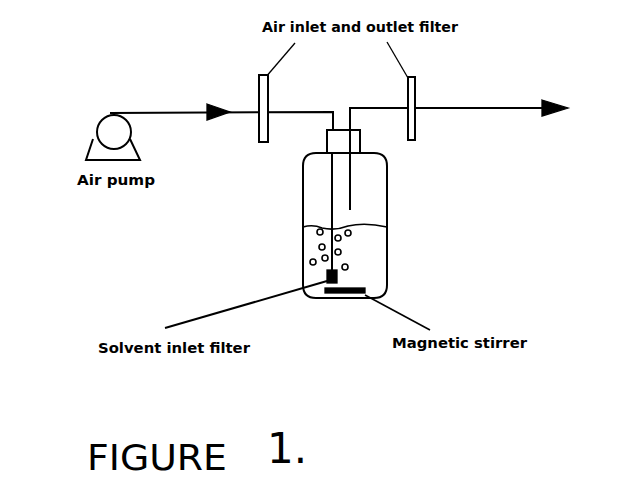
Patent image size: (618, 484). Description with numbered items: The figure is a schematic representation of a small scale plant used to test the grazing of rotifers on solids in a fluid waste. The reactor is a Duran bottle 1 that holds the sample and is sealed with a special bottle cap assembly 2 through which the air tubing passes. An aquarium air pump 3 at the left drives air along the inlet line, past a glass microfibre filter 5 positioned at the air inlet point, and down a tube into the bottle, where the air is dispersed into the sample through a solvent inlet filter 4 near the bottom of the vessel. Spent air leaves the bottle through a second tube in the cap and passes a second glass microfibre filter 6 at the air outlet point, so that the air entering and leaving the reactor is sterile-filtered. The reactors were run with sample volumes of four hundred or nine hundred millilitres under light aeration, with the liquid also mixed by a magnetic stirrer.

The Duran bottle 1 is at (388, 250).
The bottle cap assembly 2 is at (361, 145).
The aquarium air pump 3 is at (105, 131).
The solvent inlet filter 4 is at (337, 283).
The glass microfibre filter 5 is at (258, 142).
The glass microfibre filter 6 is at (417, 135).